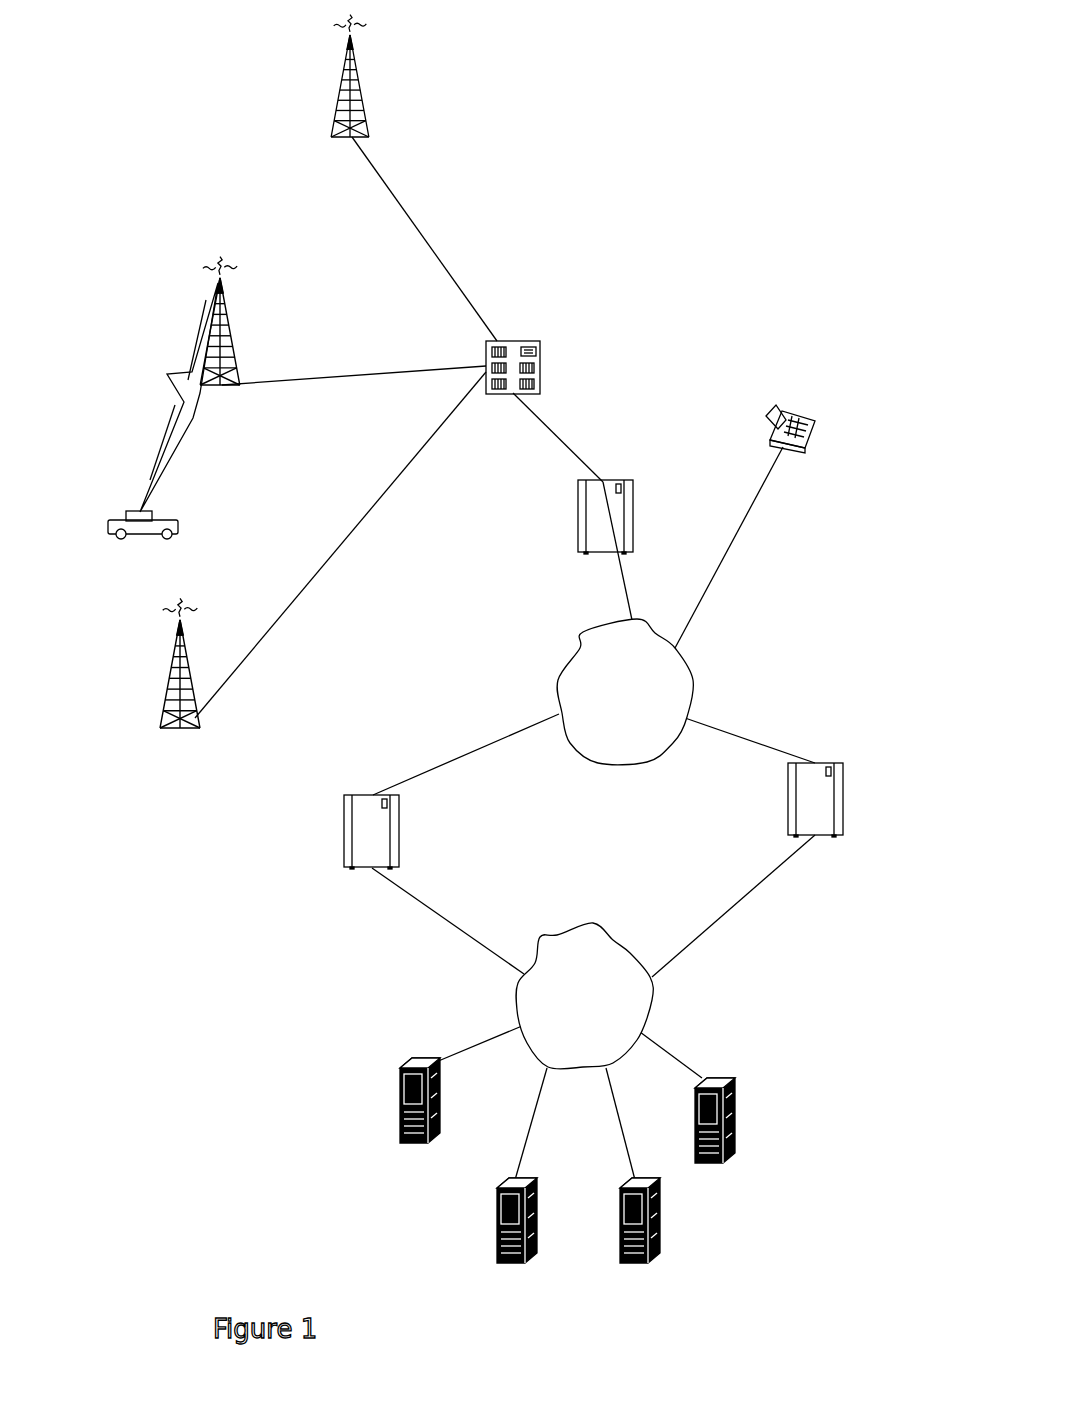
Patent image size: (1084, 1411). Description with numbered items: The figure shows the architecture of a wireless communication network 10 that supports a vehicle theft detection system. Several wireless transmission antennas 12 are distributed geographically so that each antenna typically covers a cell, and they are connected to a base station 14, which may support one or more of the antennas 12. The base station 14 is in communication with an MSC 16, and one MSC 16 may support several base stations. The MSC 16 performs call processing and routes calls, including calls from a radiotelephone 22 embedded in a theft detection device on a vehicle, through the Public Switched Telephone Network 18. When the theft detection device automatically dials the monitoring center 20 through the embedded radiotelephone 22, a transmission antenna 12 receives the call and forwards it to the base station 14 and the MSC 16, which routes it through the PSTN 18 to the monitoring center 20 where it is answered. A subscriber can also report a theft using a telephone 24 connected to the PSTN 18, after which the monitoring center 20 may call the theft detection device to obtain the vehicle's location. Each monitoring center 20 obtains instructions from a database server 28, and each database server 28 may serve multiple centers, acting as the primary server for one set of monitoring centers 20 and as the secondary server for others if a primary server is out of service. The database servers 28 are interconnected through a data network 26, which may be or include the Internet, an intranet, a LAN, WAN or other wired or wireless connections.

The wireless communication network 10 is at (643, 252).
The wireless transmission antenna 12 is at (385, 95).
The base station 14 is at (555, 340).
The MSC 16 is at (561, 500).
The Public Switched Telephone Network 18 is at (694, 650).
The monitoring center 20 is at (326, 832).
The radiotelephone 22 is at (190, 510).
The telephone 24 is at (818, 392).
The data network 26 is at (610, 895).
The database server 28 is at (395, 1048).